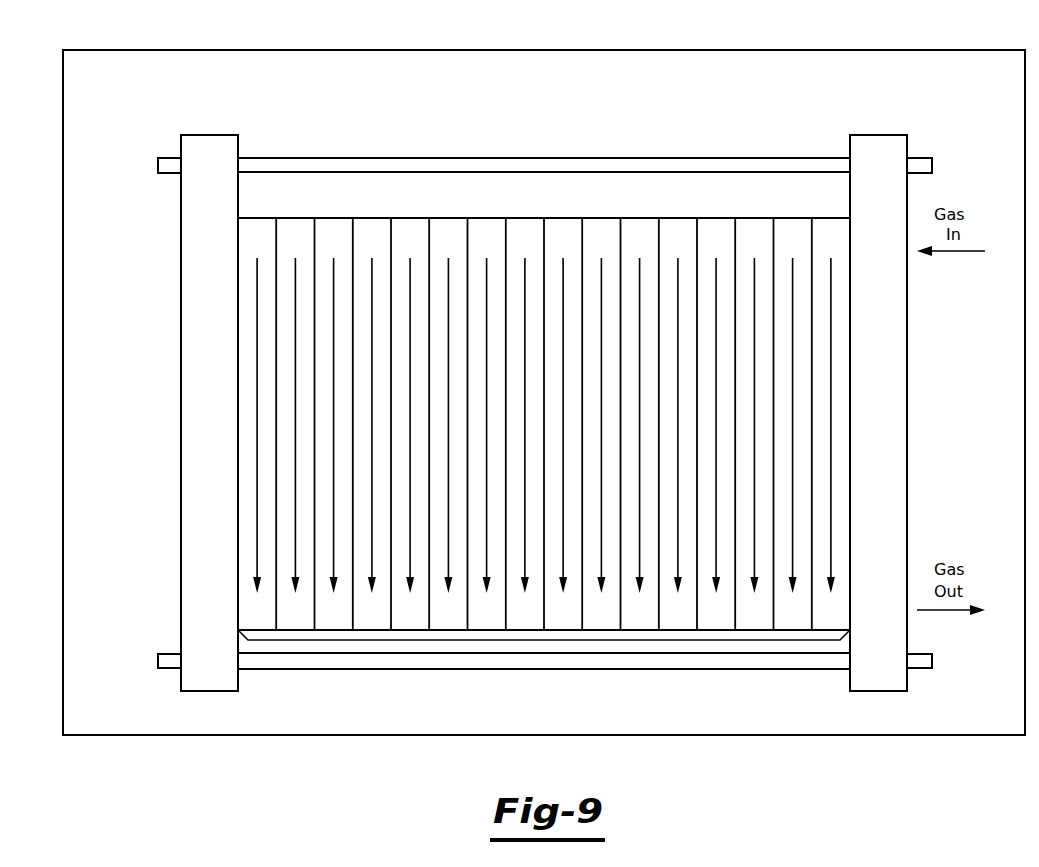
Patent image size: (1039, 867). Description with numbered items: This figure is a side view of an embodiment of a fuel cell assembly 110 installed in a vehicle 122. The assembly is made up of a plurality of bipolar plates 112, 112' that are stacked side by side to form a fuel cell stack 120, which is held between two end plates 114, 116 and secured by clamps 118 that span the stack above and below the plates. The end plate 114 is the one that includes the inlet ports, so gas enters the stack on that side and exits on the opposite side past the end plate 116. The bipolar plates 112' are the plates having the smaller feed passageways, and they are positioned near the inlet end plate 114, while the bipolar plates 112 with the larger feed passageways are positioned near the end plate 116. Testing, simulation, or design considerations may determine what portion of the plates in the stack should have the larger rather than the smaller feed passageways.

The fuel cell assembly 110 is at (780, 100).
The bipolar plates 112 is at (467, 405).
The bipolar plates 112' is at (773, 405).
The end plate 114 is at (907, 414).
The end plate 116 is at (181, 414).
The clamps 118 is at (628, 158).
The fuel cell stack 120 is at (545, 640).
The vehicle 122 is at (686, 50).